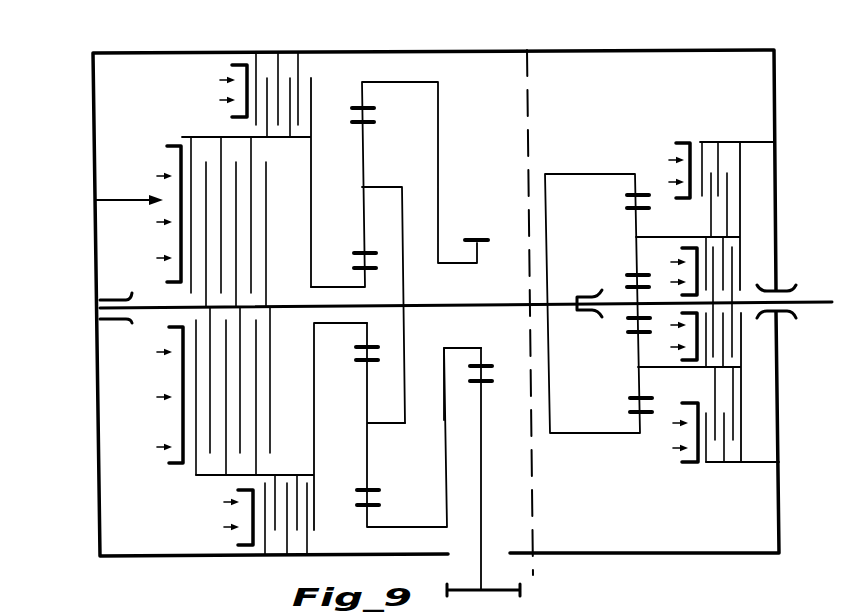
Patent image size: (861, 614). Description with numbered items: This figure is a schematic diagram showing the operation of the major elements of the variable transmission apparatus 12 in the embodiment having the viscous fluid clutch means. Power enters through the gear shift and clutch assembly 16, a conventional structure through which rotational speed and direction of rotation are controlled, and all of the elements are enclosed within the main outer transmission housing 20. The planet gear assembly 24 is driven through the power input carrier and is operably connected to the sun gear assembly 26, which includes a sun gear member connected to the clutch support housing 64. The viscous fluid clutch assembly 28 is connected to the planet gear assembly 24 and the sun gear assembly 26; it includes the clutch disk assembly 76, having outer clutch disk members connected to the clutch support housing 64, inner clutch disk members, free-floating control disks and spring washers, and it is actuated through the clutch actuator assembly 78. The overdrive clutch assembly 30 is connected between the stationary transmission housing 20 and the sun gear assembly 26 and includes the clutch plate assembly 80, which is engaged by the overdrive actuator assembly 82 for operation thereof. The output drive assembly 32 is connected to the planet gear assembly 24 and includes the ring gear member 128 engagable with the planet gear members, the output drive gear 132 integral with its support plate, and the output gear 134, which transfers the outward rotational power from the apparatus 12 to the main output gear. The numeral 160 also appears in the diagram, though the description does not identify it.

The variable transmission apparatus 12 is at (85, 448).
The gear shift and clutch assembly 16 is at (737, 101).
The main outer transmission housing 20 is at (505, 52).
The planet gear assembly 24 is at (365, 158).
The sun gear assembly 26 is at (357, 278).
The viscous fluid clutch assembly 28 is at (92, 197).
The overdrive clutch assembly 30 is at (303, 64).
The output drive assembly 32 is at (485, 494).
The clutch support housing 64 is at (197, 137).
The clutch disk assembly 76 is at (222, 188).
The clutch actuator assembly 78 is at (168, 380).
The clutch plate assembly 80 is at (275, 95).
The overdrive actuator assembly 82 is at (247, 537).
The ring gear member 128 is at (370, 518).
The output drive gear 132 is at (508, 322).
The output gear 134 is at (473, 386).
The output member 160 is at (830, 613).